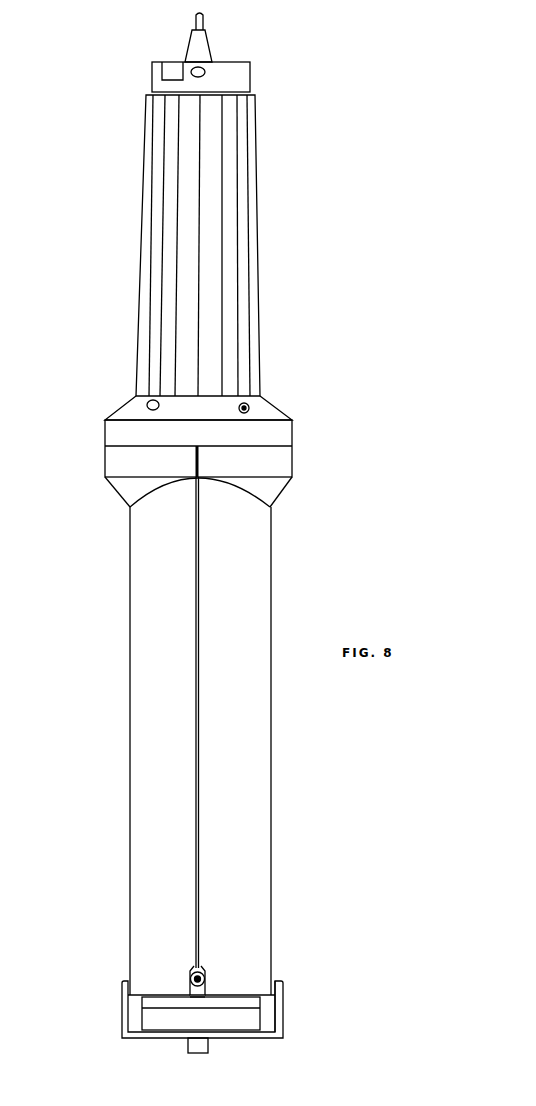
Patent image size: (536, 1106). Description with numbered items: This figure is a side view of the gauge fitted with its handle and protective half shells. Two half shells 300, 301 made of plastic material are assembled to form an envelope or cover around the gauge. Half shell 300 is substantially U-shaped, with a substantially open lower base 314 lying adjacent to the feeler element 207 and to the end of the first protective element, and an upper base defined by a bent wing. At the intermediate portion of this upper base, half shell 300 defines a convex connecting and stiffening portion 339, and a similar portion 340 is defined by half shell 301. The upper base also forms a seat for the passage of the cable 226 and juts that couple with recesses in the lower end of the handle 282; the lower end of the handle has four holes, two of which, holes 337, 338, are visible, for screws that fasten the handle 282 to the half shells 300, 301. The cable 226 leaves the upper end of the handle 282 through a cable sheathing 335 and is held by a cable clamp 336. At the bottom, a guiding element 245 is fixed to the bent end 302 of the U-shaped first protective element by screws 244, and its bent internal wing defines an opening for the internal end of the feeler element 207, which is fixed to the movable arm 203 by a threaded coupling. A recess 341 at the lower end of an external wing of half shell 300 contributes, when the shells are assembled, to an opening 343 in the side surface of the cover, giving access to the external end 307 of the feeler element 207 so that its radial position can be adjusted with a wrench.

The cable 226 is at (205, 16).
The cable sheathing 335 is at (212, 46).
The cable clamp 336 is at (232, 73).
The handle 282 is at (255, 245).
The hole 337 is at (148, 403).
The hole 338 is at (250, 406).
The convex connecting and stiffening portion 339 is at (130, 488).
The convex connecting and stiffening portion 340 is at (272, 488).
The half shell 300 is at (150, 769).
The half shell 301 is at (247, 780).
The feeler element 207 is at (207, 970).
The recess 341 is at (192, 968).
The external end 307 is at (207, 978).
The lower base 314 is at (155, 992).
The guiding element 245 is at (122, 1031).
The movable arm 203 is at (284, 983).
The bent end 302 is at (158, 1017).
The opening 343 is at (195, 997).
The screw 244 is at (204, 1047).